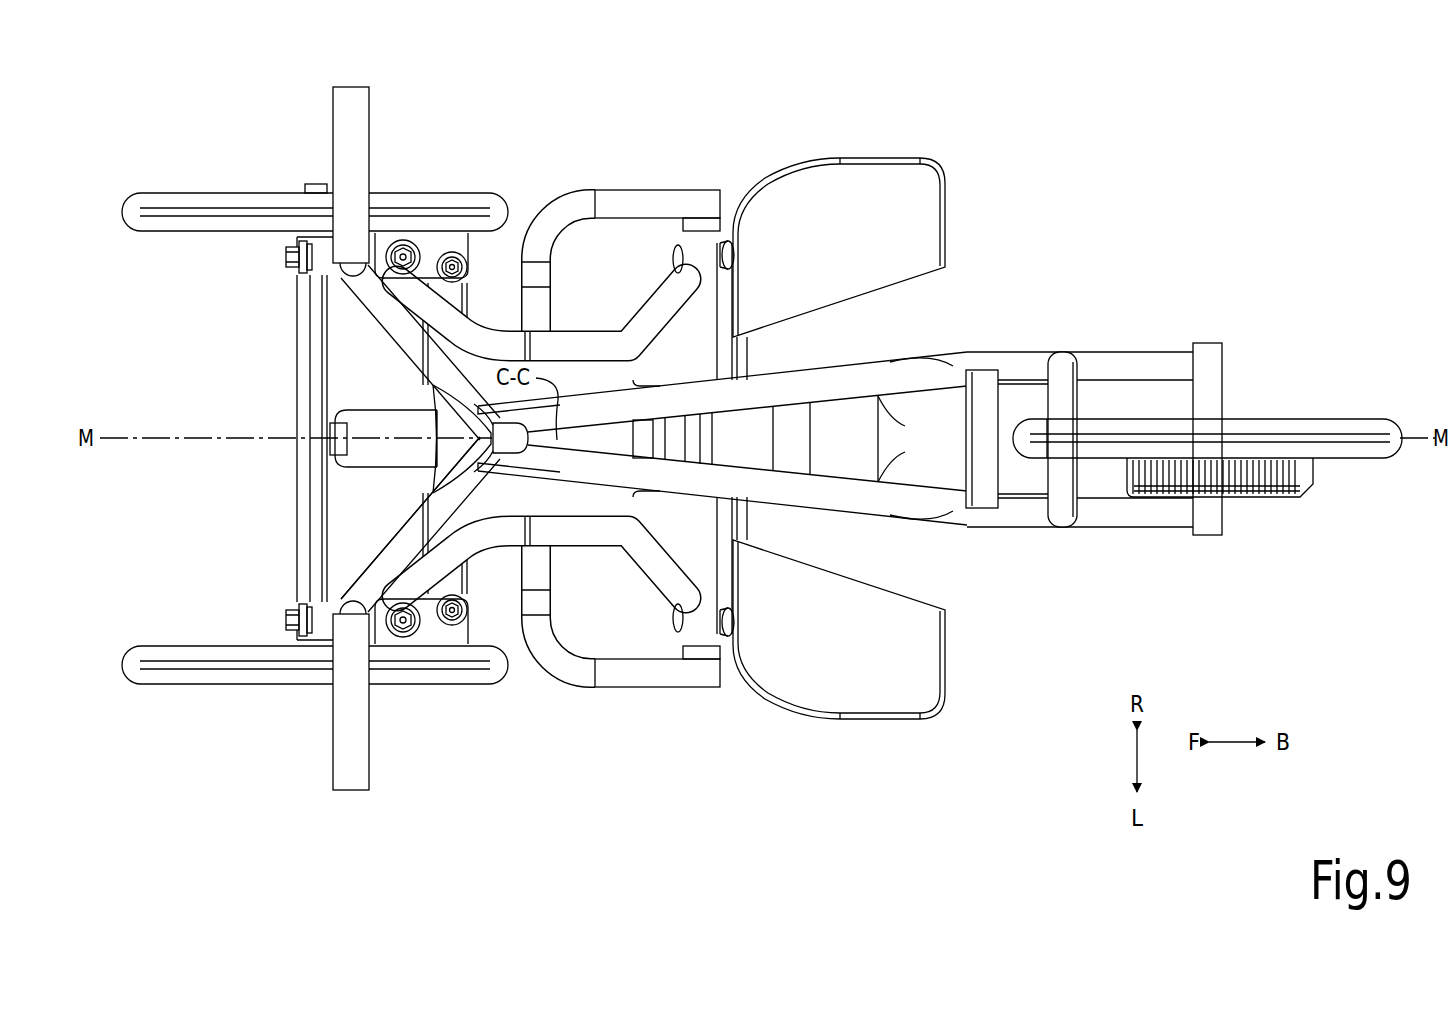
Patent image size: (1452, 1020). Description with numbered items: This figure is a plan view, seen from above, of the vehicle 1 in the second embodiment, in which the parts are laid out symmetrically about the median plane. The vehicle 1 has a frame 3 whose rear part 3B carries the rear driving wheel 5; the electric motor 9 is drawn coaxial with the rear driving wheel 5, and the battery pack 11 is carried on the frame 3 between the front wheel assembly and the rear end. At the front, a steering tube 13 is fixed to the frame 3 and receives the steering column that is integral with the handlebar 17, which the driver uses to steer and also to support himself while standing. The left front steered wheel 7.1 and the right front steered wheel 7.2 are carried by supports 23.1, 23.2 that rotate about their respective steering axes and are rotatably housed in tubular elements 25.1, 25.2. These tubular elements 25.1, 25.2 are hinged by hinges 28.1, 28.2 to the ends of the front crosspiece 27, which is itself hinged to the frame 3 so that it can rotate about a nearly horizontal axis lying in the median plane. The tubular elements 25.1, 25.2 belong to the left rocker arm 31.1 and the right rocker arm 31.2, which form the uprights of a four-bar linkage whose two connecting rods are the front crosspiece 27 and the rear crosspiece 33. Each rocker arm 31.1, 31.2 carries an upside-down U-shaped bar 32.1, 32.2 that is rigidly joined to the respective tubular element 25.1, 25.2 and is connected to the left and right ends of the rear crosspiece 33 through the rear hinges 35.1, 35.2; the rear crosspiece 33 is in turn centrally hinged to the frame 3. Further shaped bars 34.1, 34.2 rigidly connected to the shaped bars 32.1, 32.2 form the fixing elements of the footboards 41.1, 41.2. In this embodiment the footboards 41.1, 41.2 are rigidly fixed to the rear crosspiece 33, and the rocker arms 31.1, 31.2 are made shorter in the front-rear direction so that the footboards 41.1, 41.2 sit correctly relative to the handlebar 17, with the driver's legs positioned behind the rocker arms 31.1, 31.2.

The vehicle 1 is at (1209, 116).
The frame 3 is at (872, 520).
The rear part of the frame 3B is at (1050, 350).
The rear driving wheel 5 is at (1338, 436).
The left front steered wheel 7.1 is at (460, 677).
The right front steered wheel 7.2 is at (460, 200).
The electric motor 9 is at (1273, 499).
The battery pack 11 is at (838, 432).
The steering tube 13 is at (375, 428).
The handlebar 17 is at (345, 127).
The left support 23.1 is at (455, 625).
The right support 23.2 is at (455, 252).
The left tubular element 25.1 is at (382, 602).
The right tubular element 25.2 is at (382, 275).
The front crosspiece 27 is at (392, 550).
The left hinge 28.1 is at (284, 624).
The right hinge 28.2 is at (284, 256).
The left rocker arm 31.1 is at (660, 690).
The right rocker arm 31.2 is at (660, 188).
The left shaped bar 32.1 is at (580, 542).
The right shaped bar 32.2 is at (580, 335).
The rear crosspiece 33 is at (745, 360).
The left further shaped bar 34.1 is at (575, 672).
The right further shaped bar 34.2 is at (575, 205).
The left rear hinge 35.1 is at (728, 637).
The right rear hinge 35.2 is at (728, 240).
The left footboard 41.1 is at (892, 664).
The right footboard 41.2 is at (892, 213).